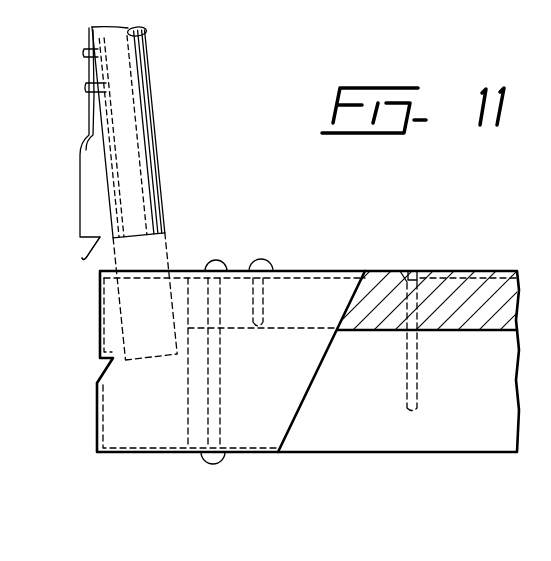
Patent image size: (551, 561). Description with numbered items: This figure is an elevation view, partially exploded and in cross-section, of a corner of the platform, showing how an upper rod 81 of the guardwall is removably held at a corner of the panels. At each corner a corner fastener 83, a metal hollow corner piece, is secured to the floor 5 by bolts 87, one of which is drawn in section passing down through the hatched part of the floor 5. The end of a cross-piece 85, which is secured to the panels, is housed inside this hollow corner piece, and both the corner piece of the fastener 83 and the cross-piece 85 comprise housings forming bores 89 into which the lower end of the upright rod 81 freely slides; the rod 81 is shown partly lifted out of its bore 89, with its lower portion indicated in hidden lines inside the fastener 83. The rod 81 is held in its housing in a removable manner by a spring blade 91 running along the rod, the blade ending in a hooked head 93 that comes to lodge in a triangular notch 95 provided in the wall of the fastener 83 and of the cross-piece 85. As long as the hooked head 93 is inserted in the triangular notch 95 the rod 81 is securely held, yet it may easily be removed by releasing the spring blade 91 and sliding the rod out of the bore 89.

The floor 5 is at (478, 272).
The upper rod 81 is at (155, 103).
The corner fastener 83 is at (291, 270).
The cross-piece 85 is at (155, 430).
The bolt 87 is at (258, 312).
The bore 89 is at (170, 286).
The spring blade 91 is at (82, 188).
The hooked head 93 is at (88, 262).
The triangular notch 95 is at (91, 370).